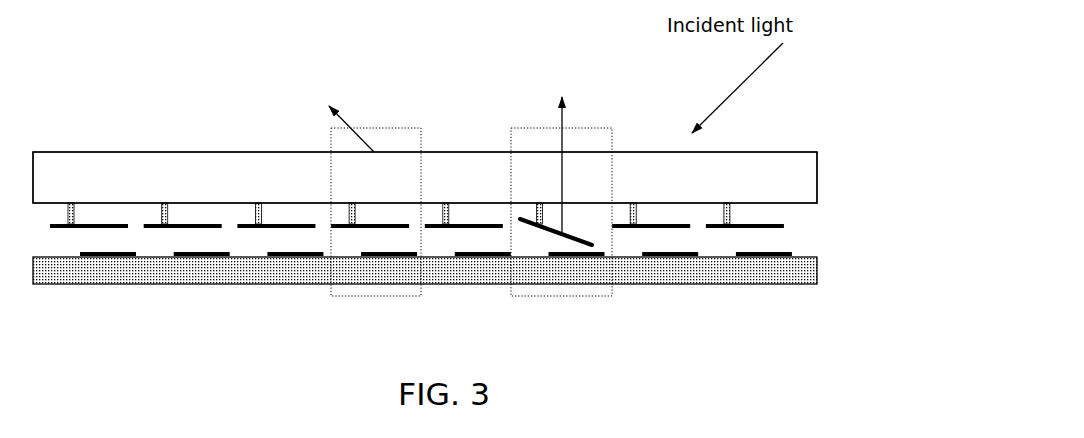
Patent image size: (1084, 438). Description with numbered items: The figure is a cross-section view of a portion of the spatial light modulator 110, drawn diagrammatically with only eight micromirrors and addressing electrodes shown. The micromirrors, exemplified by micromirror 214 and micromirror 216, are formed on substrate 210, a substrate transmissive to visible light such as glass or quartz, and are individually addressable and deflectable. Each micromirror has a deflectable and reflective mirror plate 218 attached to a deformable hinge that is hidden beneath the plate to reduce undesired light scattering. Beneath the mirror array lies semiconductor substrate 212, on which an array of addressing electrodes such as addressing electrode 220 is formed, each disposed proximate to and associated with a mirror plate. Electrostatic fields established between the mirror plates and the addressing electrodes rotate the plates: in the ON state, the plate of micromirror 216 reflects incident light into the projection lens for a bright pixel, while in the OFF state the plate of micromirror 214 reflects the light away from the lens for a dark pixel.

The spatial light modulator 110 is at (246, 89).
The substrate 210 is at (160, 152).
The semiconductor substrate 212 is at (162, 284).
The micromirror 214 is at (382, 127).
The micromirror 216 is at (583, 127).
The mirror plate 218 is at (372, 223).
The addressing electrode 220 is at (398, 257).